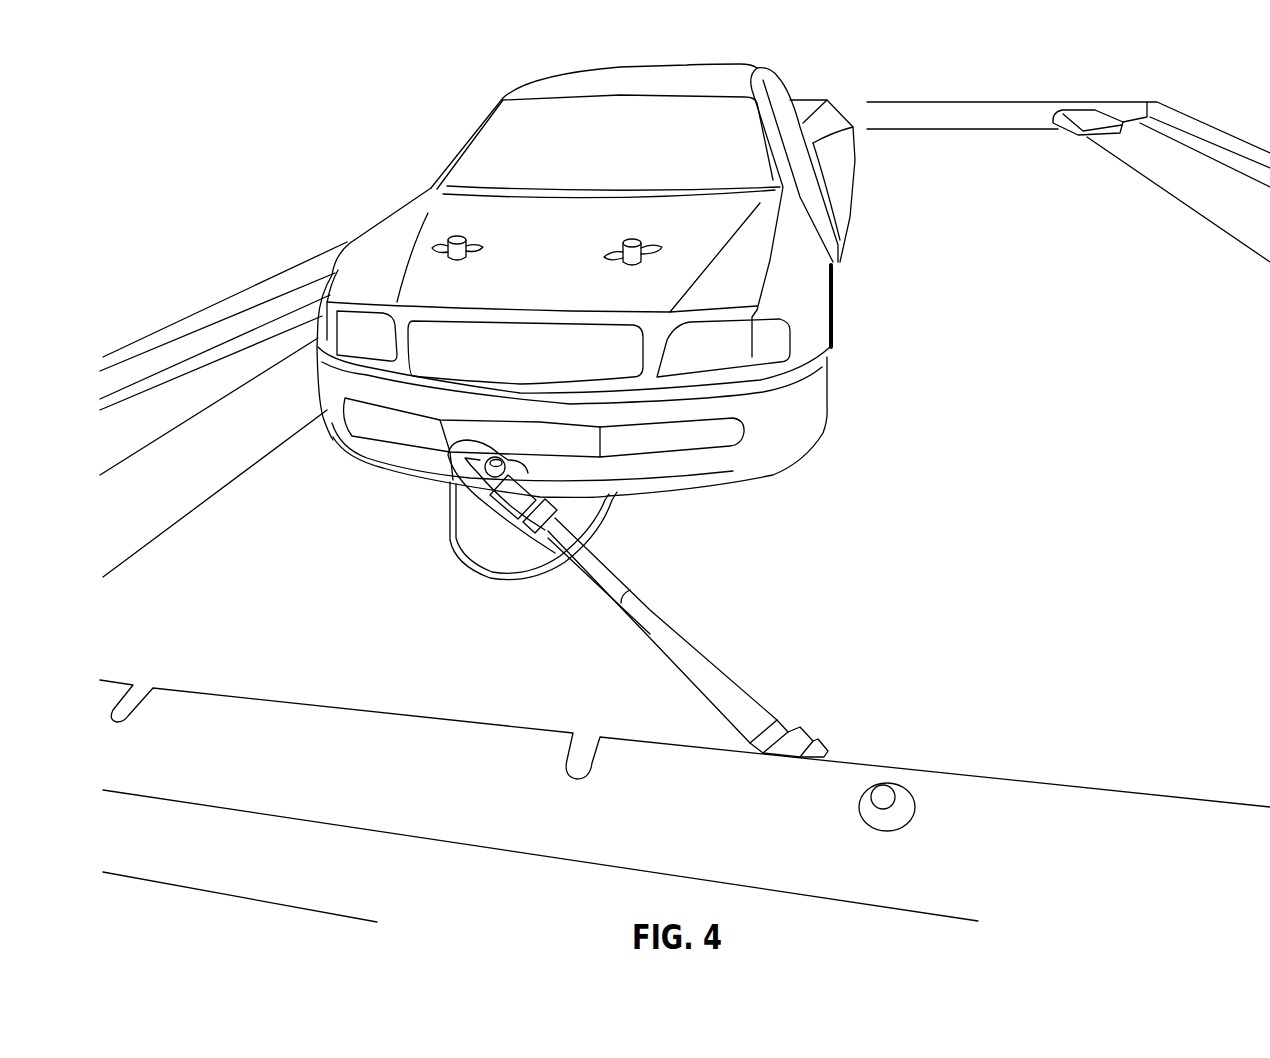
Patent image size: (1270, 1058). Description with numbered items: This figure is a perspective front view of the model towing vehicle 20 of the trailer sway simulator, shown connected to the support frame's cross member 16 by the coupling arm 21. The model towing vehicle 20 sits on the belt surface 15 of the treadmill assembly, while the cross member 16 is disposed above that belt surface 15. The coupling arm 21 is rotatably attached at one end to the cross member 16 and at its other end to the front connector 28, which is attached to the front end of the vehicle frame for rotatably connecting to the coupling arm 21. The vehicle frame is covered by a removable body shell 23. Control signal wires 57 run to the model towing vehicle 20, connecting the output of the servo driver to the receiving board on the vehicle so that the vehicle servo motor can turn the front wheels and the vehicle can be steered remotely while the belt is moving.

The belt surface 15 is at (962, 142).
The cross member 16 is at (312, 745).
The model towing vehicle 20 is at (581, 280).
The coupling arm 21 is at (703, 673).
The removable body shell 23 is at (568, 242).
The front connector 28 is at (495, 557).
The control signal wires 57 is at (448, 473).